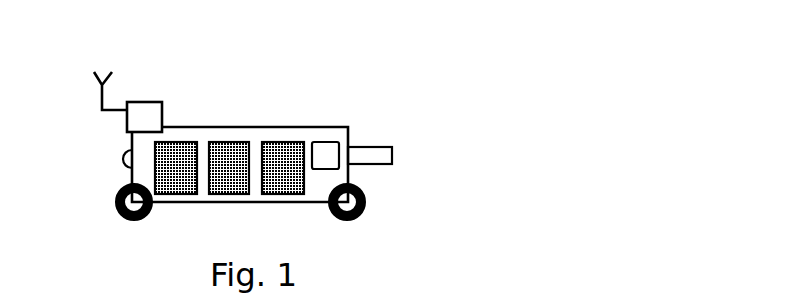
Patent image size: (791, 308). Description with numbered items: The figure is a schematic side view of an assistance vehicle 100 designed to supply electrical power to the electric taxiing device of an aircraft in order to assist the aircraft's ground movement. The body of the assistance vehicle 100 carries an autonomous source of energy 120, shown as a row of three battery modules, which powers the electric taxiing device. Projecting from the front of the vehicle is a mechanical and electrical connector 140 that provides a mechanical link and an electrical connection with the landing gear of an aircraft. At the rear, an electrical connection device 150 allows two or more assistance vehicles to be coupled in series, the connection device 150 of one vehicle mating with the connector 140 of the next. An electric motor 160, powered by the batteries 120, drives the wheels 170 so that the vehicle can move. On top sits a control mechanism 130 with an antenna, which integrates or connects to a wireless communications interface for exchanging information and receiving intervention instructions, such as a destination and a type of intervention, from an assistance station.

The assistance vehicle 100 is at (374, 56).
The autonomous source of energy 120 is at (243, 140).
The control mechanism 130 is at (148, 100).
The mechanical and electrical connector 140 is at (362, 145).
The electrical connection device 150 is at (113, 160).
The electric motor 160 is at (322, 140).
The wheels 170 is at (115, 202).